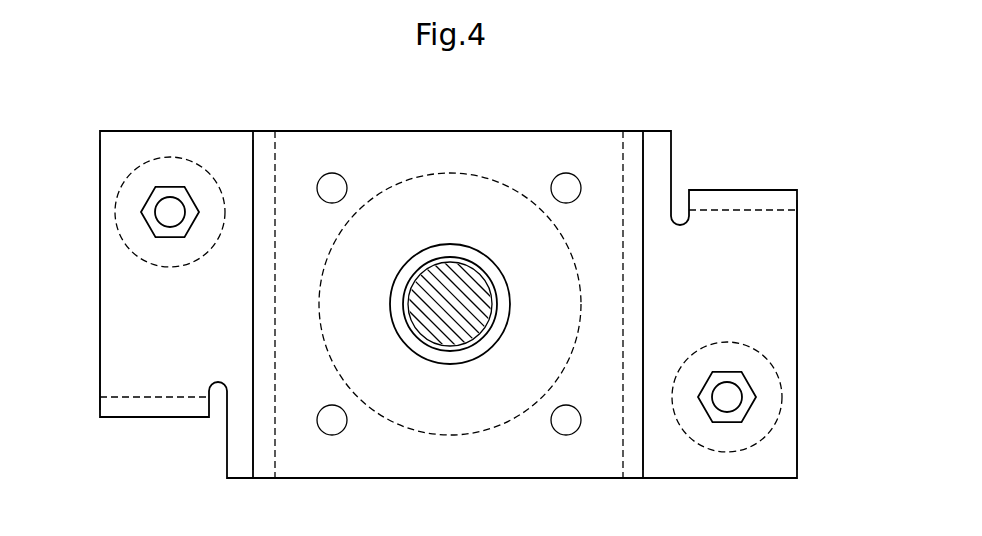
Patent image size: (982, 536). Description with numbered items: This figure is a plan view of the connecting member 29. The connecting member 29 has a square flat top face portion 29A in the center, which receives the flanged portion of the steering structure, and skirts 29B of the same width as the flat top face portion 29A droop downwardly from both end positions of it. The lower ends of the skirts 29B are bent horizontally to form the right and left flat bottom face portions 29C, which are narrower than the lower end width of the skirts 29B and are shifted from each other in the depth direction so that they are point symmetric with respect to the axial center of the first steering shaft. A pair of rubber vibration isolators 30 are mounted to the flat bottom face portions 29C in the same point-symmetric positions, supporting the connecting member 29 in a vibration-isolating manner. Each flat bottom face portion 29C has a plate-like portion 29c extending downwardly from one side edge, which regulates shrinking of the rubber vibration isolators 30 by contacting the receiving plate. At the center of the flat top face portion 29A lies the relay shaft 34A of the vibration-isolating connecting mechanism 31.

The connecting member 29 is at (522, 129).
The flat top face portion 29A is at (325, 140).
The skirts 29B is at (252, 336).
The flat bottom face portions 29C is at (135, 303).
The plate-like portion 29c is at (158, 420).
The rubber vibration isolators 30 is at (117, 198).
The vibration-isolating connecting mechanism 31 is at (402, 170).
The relay shaft 34A is at (450, 323).